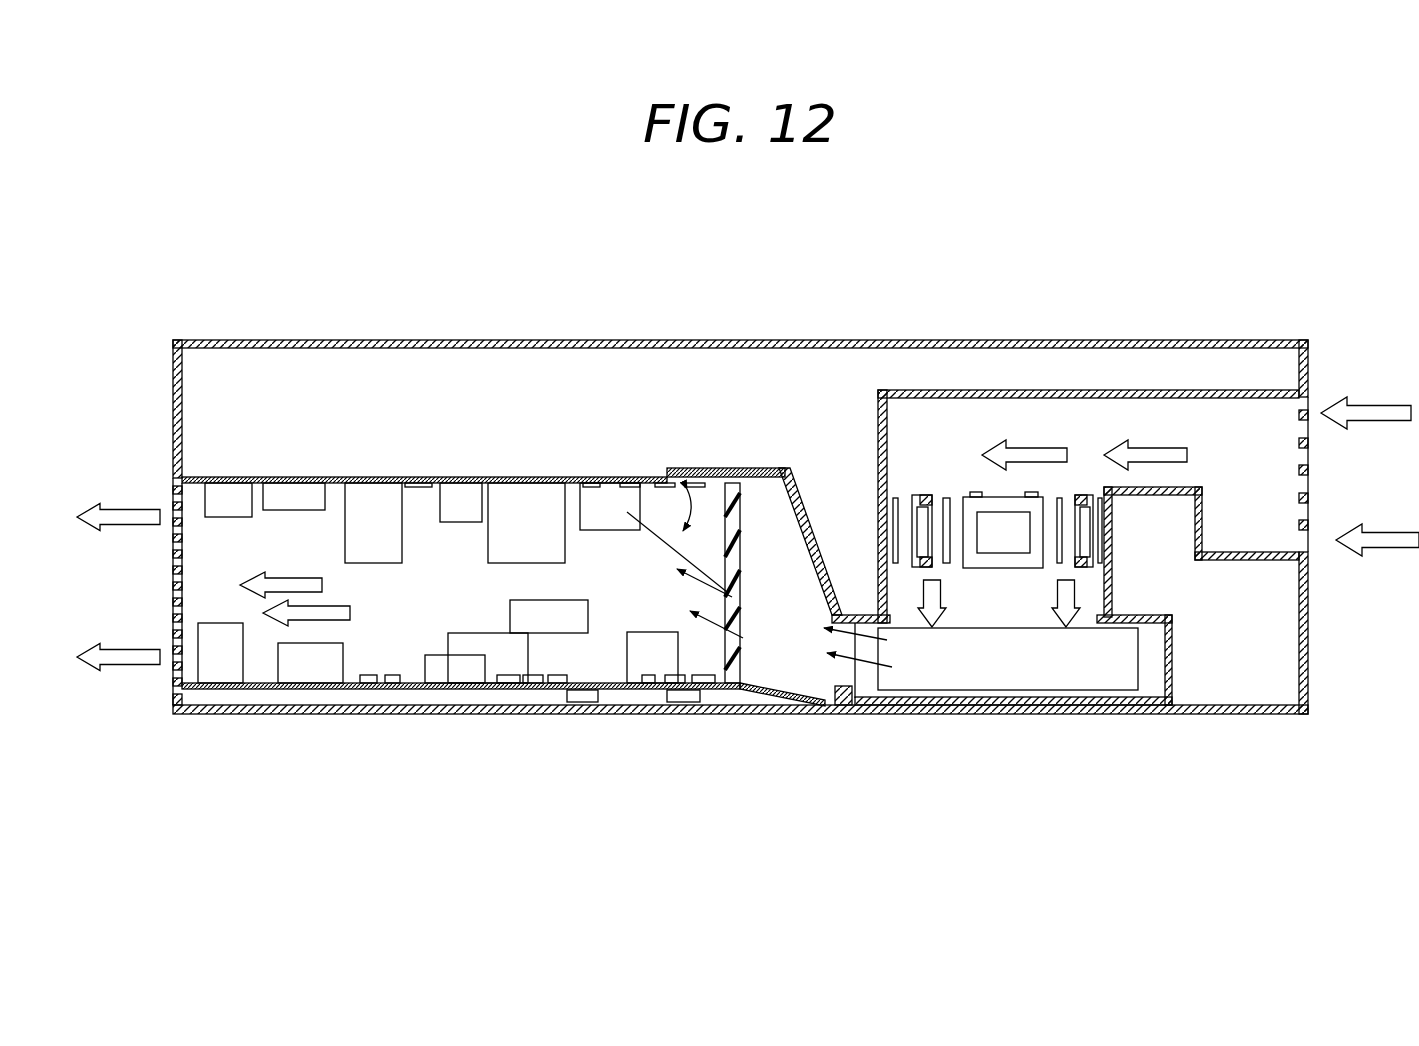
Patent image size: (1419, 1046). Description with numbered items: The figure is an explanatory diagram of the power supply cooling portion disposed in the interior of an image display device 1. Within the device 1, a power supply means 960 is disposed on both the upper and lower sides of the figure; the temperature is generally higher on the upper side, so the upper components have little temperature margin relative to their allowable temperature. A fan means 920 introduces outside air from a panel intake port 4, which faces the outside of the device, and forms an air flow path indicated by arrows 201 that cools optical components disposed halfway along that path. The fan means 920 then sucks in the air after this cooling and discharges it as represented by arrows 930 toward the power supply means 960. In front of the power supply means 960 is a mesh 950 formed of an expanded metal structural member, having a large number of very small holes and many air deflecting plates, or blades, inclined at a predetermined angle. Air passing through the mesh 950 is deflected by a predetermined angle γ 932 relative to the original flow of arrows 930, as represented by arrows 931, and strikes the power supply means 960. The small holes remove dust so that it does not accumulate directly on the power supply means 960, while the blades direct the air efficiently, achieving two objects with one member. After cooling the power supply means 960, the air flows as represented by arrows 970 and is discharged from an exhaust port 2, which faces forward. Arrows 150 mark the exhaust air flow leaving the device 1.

The image display device 1 is at (548, 341).
The exhaust port 2 is at (173, 577).
The panel intake port 4 is at (1308, 483).
The exhaust air flow 150 is at (117, 511).
The arrows 201 is at (1149, 452).
The fan means 920 is at (1030, 667).
The arrows 930 is at (827, 662).
The arrows 931 is at (688, 587).
The angle γ 932 is at (725, 471).
The mesh 950 is at (723, 612).
The power supply means 960 is at (475, 643).
The arrows 970 is at (308, 613).